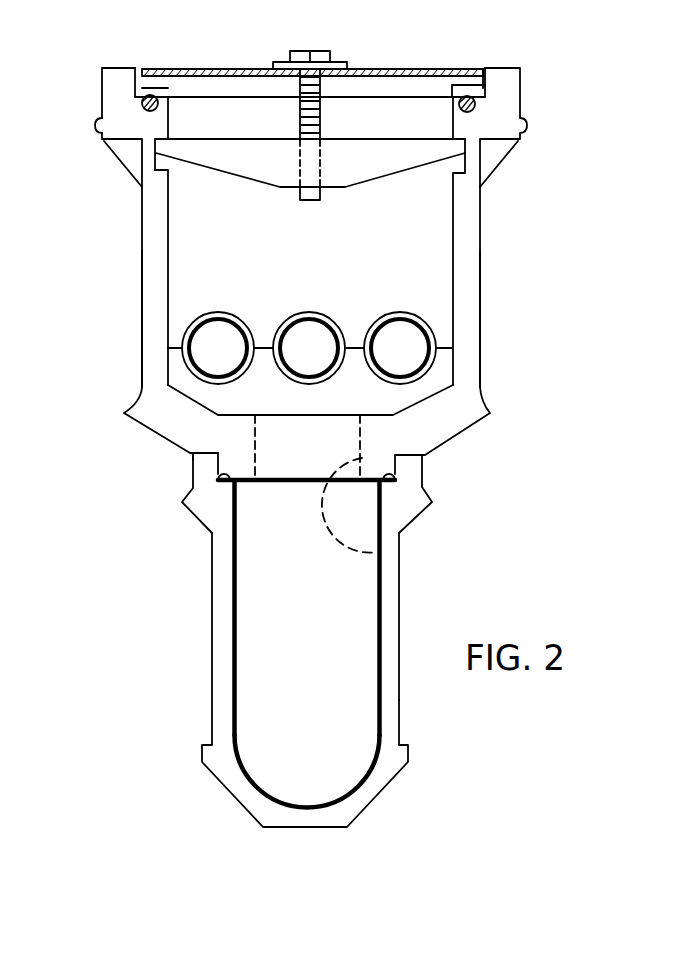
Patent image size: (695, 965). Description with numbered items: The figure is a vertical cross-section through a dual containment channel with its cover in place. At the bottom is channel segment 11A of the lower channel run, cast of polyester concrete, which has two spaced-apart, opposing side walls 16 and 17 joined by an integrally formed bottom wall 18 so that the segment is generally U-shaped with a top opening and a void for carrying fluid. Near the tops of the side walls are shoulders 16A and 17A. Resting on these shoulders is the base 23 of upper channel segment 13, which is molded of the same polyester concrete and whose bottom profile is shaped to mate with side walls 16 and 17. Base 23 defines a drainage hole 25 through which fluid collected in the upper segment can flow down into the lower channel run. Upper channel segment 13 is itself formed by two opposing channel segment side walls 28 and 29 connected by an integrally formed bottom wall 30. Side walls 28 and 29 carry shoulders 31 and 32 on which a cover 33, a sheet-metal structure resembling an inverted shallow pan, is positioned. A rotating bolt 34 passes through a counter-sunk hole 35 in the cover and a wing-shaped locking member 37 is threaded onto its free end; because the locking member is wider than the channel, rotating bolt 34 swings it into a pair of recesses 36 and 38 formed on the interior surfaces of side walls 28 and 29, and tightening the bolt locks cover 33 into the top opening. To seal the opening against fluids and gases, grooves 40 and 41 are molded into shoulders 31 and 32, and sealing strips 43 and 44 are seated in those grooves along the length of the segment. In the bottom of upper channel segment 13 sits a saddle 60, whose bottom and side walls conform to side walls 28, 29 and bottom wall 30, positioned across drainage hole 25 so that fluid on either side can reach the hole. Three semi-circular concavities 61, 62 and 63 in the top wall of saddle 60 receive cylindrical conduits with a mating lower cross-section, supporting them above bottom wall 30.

The channel segment 11A is at (401, 705).
The channel segment 13 is at (482, 218).
The side wall 16 is at (386, 600).
The shoulder 16A is at (385, 470).
The side wall 17 is at (212, 696).
The shoulder 17A is at (203, 488).
The bottom wall 18 is at (308, 795).
The base 23 is at (200, 455).
The drainage hole 25 is at (418, 546).
The channel segment side wall 28 is at (145, 303).
The channel segment side wall 29 is at (472, 320).
The bottom wall 30 is at (385, 412).
The shoulder 31 is at (98, 128).
The shoulder 32 is at (487, 85).
The cover 33 is at (200, 69).
The rotating bolt 34 is at (320, 50).
The counter-sunk hole 35 is at (300, 83).
The recess 36 is at (166, 160).
The locking member 37 is at (276, 183).
The recess 38 is at (462, 163).
The groove 40 is at (140, 108).
The groove 41 is at (472, 112).
The sealing strip 43 is at (142, 104).
The sealing strip 44 is at (472, 75).
The saddle 60 is at (145, 390).
The semi-circular concavity 61 is at (258, 345).
The semi-circular concavity 62 is at (353, 334).
The semi-circular concavity 63 is at (437, 335).